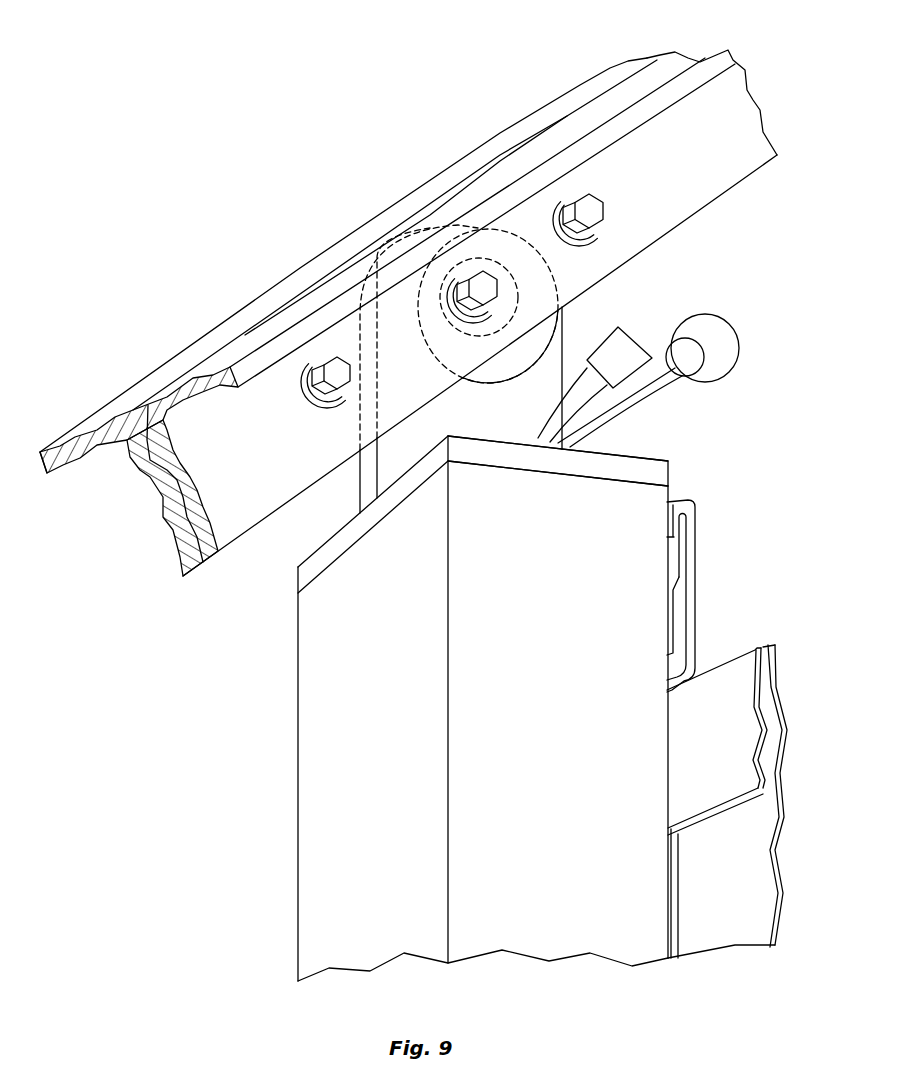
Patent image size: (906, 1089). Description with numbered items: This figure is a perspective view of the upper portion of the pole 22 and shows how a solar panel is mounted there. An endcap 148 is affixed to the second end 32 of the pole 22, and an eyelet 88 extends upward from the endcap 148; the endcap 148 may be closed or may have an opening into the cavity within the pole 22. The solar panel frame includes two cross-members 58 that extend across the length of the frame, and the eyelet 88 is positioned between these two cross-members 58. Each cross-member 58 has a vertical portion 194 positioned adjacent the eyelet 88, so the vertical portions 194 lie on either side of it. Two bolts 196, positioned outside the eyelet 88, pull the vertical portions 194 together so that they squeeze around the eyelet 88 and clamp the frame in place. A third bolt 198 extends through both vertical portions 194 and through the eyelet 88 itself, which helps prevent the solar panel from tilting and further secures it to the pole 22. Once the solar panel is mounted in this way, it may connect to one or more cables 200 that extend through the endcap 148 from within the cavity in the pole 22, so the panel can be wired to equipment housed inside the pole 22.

The cross-member 58 is at (655, 62).
The vertical portion 194 is at (190, 473).
The bolt 196 is at (592, 206).
The third bolt 198 is at (487, 288).
The eyelet 88 is at (471, 421).
The cable 200 is at (673, 342).
The endcap 148 is at (617, 455).
The second end 32 is at (692, 478).
The pole 22 is at (318, 752).